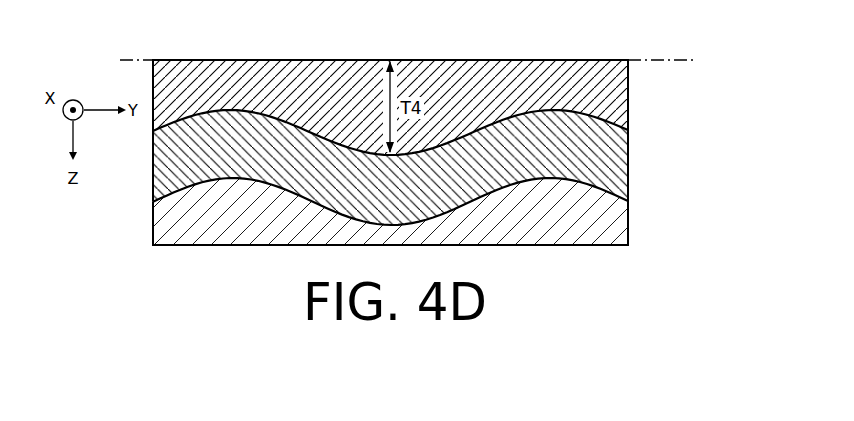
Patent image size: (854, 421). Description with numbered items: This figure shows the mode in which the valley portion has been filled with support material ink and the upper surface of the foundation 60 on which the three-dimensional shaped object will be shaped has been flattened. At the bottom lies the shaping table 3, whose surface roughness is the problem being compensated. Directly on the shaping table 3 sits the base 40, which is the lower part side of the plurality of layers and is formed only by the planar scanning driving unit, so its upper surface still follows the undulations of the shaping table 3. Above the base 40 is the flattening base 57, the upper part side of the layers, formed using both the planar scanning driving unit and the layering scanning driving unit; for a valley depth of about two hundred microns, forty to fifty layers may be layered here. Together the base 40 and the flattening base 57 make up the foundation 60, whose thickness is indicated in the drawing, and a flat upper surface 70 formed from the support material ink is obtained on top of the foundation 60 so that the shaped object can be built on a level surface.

The shaping table 3 is at (152, 217).
The base 40 is at (629, 163).
The flattening base 57 is at (629, 99).
The foundation 60 is at (697, 62).
The flat upper surface 70 is at (438, 59).